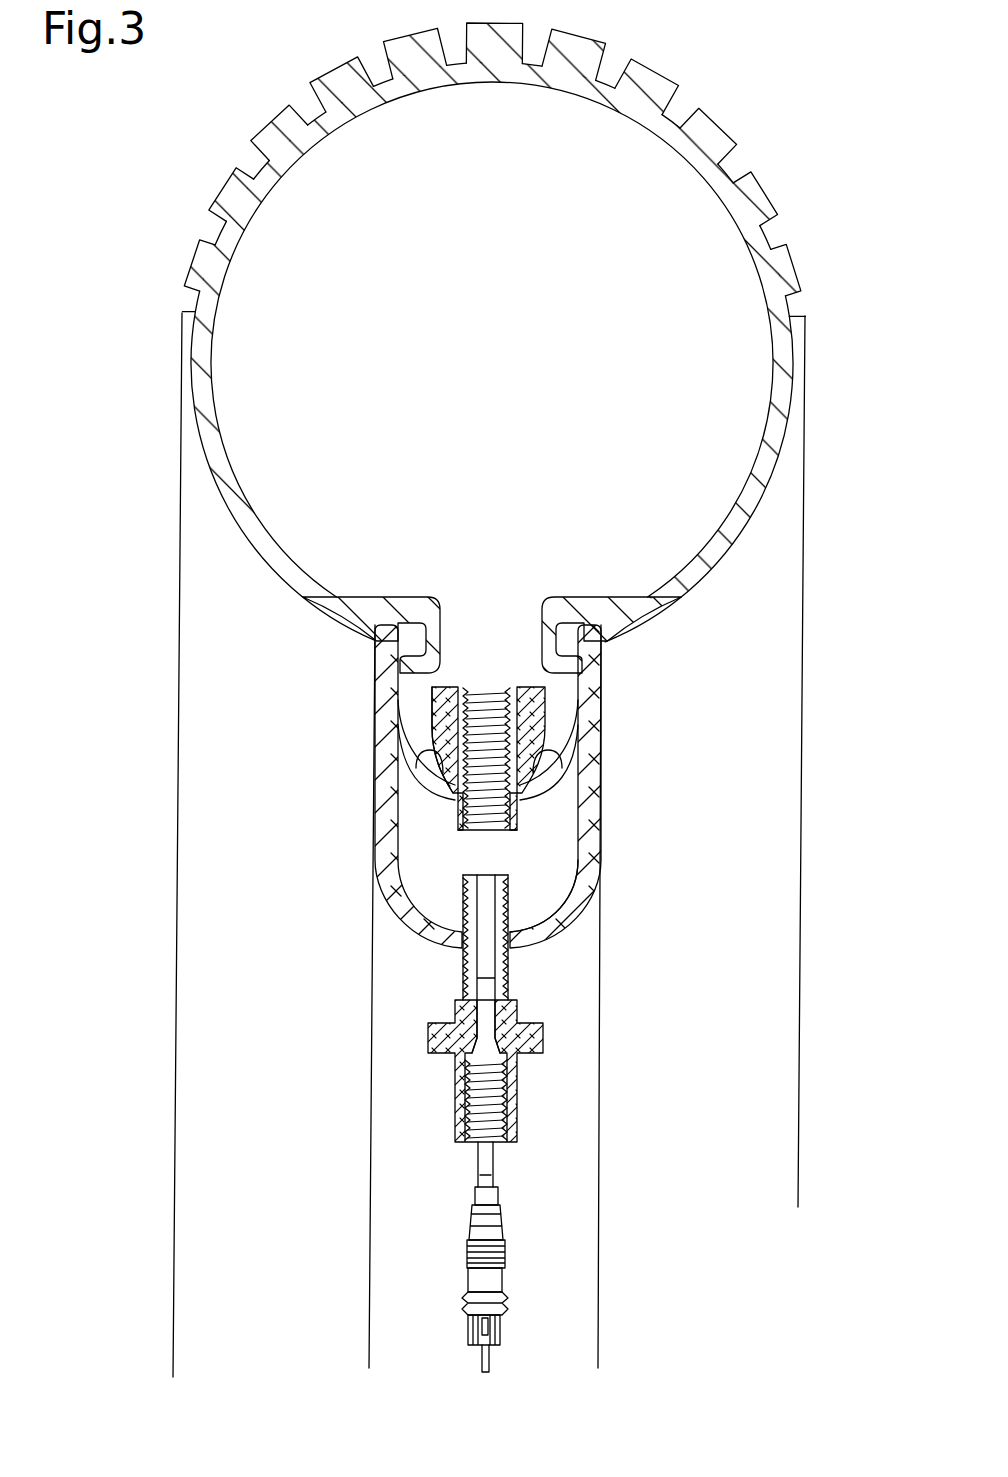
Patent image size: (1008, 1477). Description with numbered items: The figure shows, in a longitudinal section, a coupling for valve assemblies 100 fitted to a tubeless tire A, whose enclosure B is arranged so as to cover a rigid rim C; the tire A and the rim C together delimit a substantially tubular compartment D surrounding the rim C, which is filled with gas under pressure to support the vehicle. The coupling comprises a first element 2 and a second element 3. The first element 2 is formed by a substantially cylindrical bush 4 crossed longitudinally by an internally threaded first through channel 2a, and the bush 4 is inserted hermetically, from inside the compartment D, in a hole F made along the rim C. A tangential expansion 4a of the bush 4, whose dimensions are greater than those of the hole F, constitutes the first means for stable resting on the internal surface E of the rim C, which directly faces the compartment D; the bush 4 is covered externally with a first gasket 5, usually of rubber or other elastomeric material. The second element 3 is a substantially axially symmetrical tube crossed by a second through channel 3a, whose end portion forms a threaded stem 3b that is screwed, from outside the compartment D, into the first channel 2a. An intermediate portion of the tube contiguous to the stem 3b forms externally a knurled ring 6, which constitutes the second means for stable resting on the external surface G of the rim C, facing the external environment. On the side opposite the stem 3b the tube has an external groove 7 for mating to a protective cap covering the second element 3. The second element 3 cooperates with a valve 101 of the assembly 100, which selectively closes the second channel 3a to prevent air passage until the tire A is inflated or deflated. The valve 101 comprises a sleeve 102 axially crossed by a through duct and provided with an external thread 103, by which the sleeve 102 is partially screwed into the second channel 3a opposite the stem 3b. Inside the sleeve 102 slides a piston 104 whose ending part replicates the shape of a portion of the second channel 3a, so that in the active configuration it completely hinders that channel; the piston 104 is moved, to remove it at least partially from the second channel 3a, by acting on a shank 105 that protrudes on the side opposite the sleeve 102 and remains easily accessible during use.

The tubeless tire A is at (734, 116).
The enclosure B is at (758, 190).
The rigid rim C is at (587, 739).
The tubular compartment D is at (722, 386).
The internal surface of the rim E is at (545, 758).
The hole F is at (455, 813).
The external surface of the rim G is at (557, 933).
The first element 2 is at (550, 694).
The first through channel 2a is at (480, 698).
The second element 3 is at (482, 936).
The second through channel 3a is at (486, 968).
The threaded stem 3b is at (460, 897).
The bush 4 is at (548, 730).
The tangential expansion 4a is at (528, 705).
The first gasket 5 is at (437, 713).
The knurled ring 6 is at (542, 1043).
The external groove 7 is at (455, 1075).
The valve assembly 100 is at (678, 993).
The valve 101 is at (449, 1269).
The sleeve 102 is at (504, 1273).
The external thread 103 is at (466, 1245).
The piston 104 is at (479, 1162).
The shank 105 is at (477, 1347).